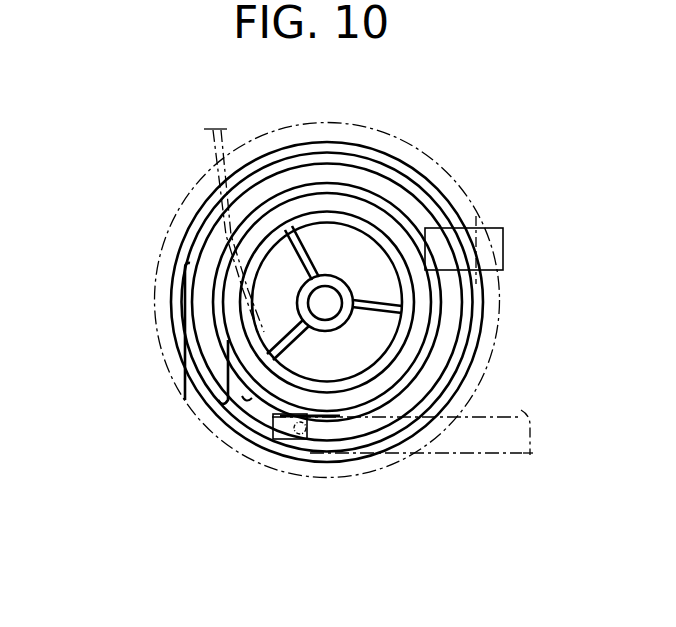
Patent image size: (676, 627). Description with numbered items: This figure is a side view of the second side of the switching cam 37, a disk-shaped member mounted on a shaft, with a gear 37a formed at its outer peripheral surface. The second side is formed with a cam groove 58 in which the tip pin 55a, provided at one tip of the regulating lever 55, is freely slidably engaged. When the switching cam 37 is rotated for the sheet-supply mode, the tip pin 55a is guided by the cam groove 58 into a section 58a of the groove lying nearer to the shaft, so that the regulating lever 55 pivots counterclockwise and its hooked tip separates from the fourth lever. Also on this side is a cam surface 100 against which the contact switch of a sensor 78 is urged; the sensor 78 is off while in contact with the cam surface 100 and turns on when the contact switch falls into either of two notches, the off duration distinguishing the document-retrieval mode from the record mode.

The cam surface 100 is at (351, 212).
The sensor 78 is at (497, 230).
The switching cam 37 is at (151, 317).
The gear 37a is at (162, 246).
The cam groove 58 is at (250, 398).
The section of the cam groove 58a is at (223, 335).
The regulating lever 55 is at (510, 453).
The tip pin 55a is at (302, 435).